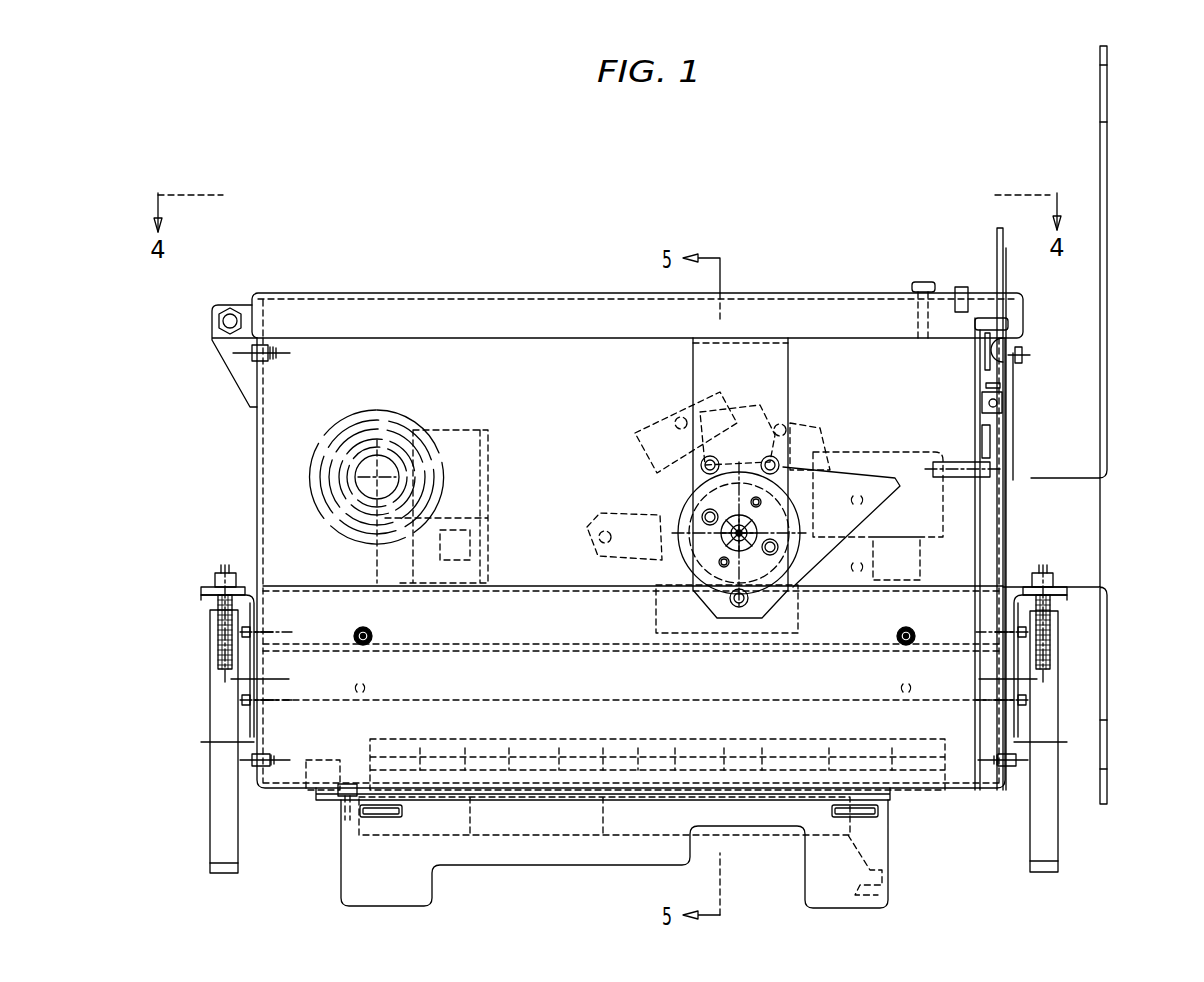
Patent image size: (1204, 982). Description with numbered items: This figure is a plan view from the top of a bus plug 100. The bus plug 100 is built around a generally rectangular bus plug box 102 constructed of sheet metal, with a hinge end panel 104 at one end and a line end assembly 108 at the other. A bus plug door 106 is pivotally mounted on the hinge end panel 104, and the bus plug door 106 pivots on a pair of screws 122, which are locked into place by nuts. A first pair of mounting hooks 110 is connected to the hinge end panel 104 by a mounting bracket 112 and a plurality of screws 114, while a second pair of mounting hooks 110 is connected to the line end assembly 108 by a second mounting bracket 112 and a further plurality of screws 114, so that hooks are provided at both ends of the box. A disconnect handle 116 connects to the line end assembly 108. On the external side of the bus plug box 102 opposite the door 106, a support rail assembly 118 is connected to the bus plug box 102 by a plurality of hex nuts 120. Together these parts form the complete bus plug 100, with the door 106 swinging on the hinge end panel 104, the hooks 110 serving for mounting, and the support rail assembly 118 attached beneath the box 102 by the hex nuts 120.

The bus plug 100 is at (845, 152).
The bus plug box 102 is at (955, 793).
The hinge end panel 104 is at (258, 486).
The bus plug door 106 is at (400, 292).
The line end assembly 108 is at (1015, 383).
The mounting hooks 110 is at (212, 822).
The mounting bracket 112 is at (203, 742).
The screws 114 is at (223, 572).
The disconnect handle 116 is at (1108, 346).
The support rail assembly 118 is at (527, 867).
The hex nuts 120 is at (342, 797).
The screws 122 is at (217, 312).